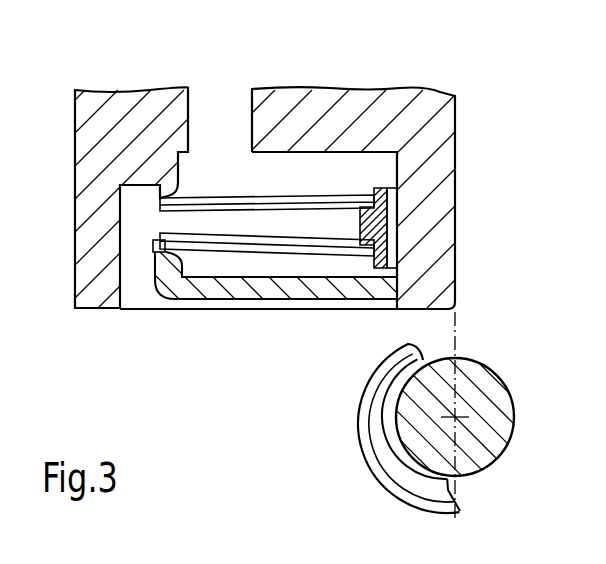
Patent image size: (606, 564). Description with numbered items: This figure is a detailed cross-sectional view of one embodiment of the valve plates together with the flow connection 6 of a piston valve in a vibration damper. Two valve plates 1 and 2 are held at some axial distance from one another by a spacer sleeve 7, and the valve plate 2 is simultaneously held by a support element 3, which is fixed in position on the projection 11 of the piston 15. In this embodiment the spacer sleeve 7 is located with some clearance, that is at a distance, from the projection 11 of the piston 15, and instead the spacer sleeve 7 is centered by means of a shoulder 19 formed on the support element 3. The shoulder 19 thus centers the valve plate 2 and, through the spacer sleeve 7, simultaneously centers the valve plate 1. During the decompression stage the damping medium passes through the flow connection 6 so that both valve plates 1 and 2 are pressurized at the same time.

The valve plate 1 is at (321, 195).
The valve plate 2 is at (255, 252).
The support element 3 is at (305, 290).
The flow connection 6 is at (393, 225).
The spacer sleeve 7 is at (398, 192).
The projection 11 is at (456, 365).
The piston 15 is at (352, 103).
The shoulder 19 is at (157, 246).